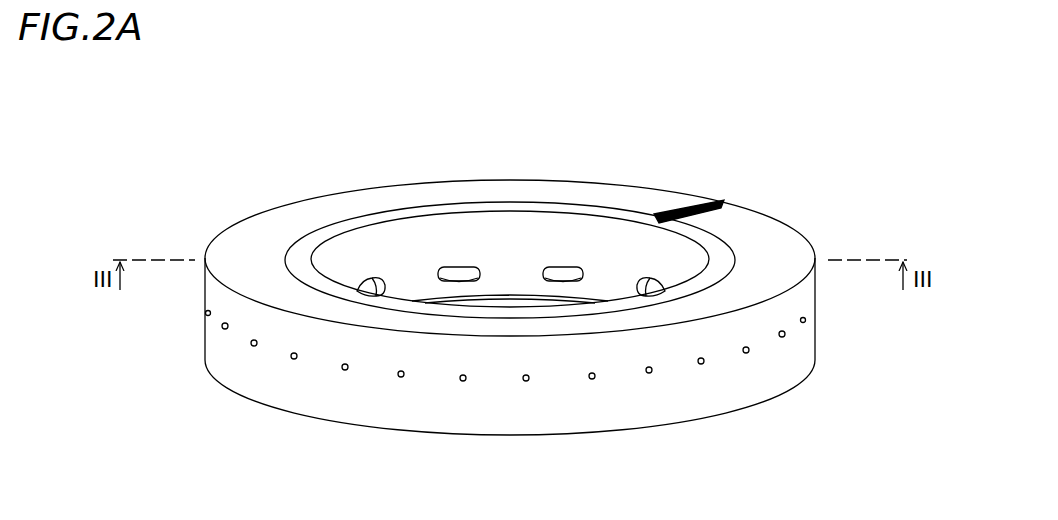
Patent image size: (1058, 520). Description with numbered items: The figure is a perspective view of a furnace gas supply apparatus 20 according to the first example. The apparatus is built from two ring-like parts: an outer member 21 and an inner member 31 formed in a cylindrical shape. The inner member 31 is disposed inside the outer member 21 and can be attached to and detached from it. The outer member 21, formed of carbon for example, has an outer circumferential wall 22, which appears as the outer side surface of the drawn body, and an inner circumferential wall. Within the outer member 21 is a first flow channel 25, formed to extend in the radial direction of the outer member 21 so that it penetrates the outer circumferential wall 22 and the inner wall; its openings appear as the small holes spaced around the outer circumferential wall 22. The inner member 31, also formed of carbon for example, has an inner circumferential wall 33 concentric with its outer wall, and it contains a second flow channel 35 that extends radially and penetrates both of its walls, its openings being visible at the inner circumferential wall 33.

The furnace gas supply apparatus 20 is at (481, 286).
The outer member 21 is at (236, 211).
The outer circumferential wall 22 is at (628, 408).
The first flow channel 25 is at (521, 388).
The inner member 31 is at (722, 228).
The inner circumferential wall 33 is at (613, 237).
The second flow channel 35 is at (559, 259).